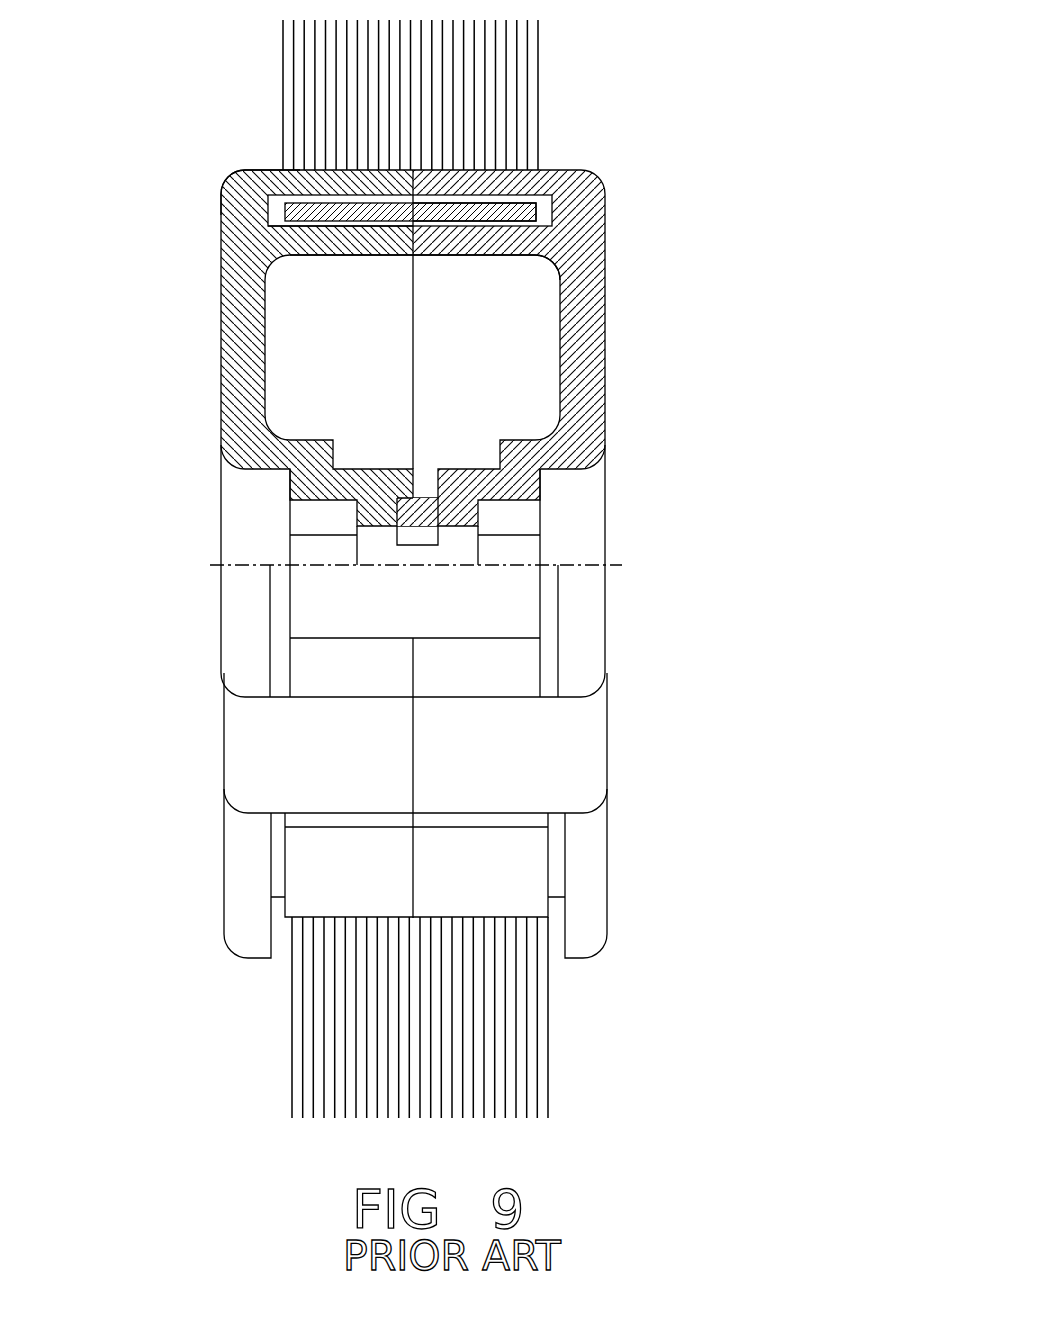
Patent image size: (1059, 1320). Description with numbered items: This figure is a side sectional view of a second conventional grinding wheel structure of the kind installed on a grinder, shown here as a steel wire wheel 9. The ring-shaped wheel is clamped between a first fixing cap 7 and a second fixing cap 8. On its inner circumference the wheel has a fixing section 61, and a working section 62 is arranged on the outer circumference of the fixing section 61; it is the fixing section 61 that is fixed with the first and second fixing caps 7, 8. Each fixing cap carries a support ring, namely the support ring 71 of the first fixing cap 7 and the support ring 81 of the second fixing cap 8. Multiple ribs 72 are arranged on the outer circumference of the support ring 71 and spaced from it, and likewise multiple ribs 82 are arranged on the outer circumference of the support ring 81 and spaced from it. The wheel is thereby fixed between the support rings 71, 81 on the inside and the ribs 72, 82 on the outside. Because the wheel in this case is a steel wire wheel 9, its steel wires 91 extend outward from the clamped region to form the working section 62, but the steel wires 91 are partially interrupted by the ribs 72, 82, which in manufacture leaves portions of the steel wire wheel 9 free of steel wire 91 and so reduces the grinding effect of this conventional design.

The steel wire wheel 9 is at (568, 128).
The steel wires 91 is at (538, 53).
The second fixing cap 8 is at (238, 337).
The support ring 81 is at (343, 243).
The ribs 82 is at (235, 172).
The first fixing cap 7 is at (582, 360).
The support ring 71 is at (527, 238).
The ribs 72 is at (605, 189).
The fixing section 61 is at (607, 217).
The working section 62 is at (508, 138).